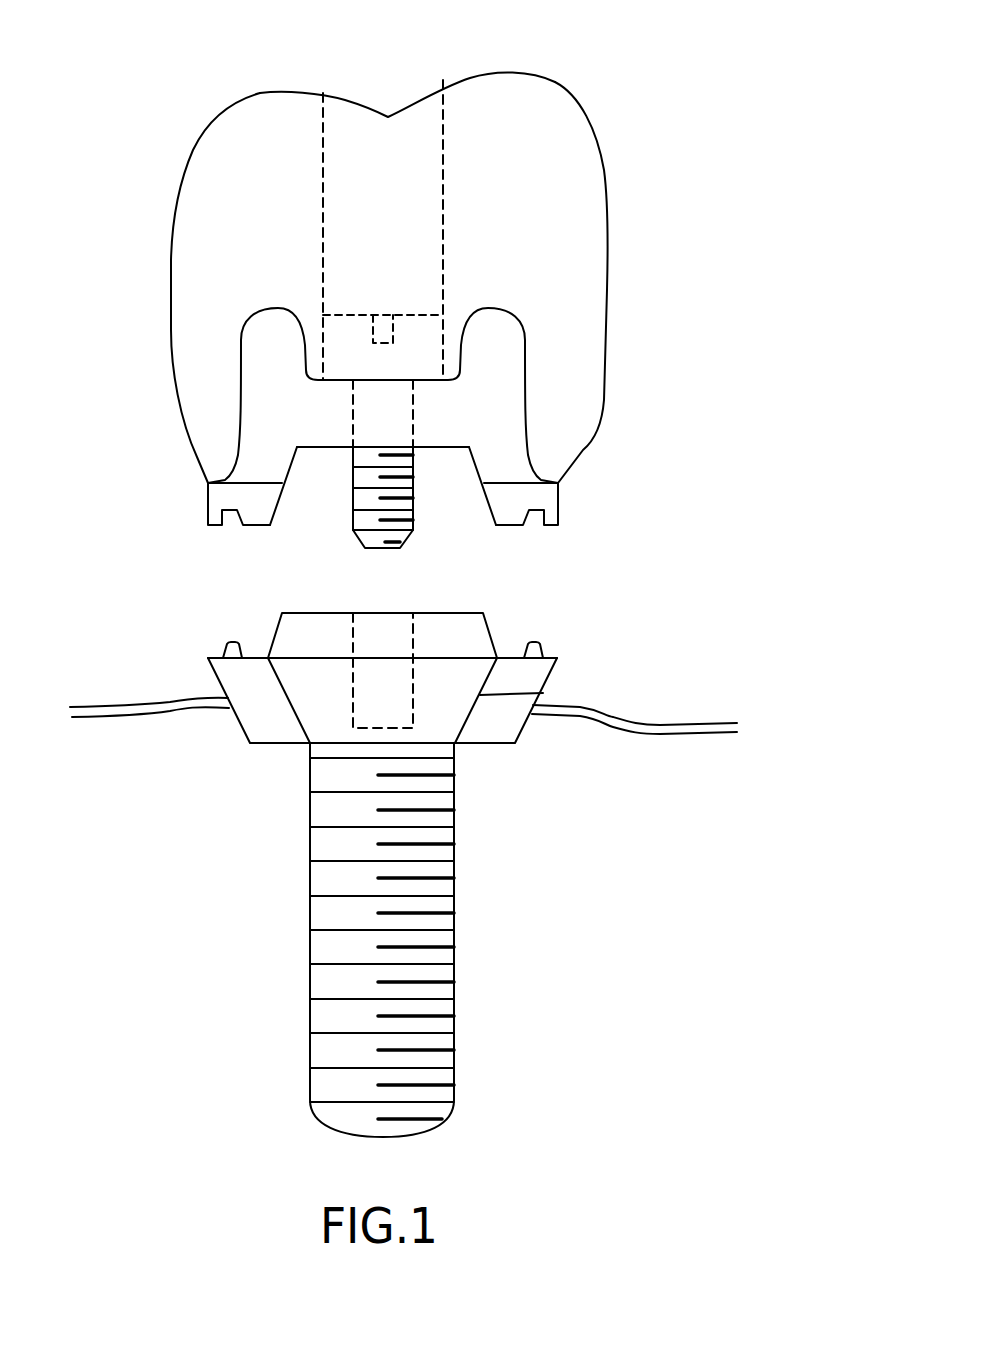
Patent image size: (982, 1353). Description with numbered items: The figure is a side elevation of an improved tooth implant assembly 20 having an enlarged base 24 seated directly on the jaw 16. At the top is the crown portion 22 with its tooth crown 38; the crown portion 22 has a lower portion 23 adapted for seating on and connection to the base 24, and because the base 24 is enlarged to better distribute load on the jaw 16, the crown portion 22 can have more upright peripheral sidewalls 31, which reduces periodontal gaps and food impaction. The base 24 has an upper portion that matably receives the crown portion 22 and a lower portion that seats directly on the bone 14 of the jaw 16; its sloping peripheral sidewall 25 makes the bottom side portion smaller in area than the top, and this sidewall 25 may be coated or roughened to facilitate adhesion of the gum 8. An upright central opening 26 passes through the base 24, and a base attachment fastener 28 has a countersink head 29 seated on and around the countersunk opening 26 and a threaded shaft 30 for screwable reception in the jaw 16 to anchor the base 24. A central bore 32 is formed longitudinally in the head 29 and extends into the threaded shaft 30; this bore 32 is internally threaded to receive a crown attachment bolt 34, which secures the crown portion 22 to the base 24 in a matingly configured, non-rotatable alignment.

The gum 8 is at (737, 730).
The bone 14 is at (150, 712).
The jaw 16 is at (708, 822).
The tooth implant assembly 20 is at (666, 490).
The crown portion 22 is at (620, 75).
The lower portion 23 is at (207, 507).
The base 24 is at (543, 667).
The sloping peripheral sidewall 25 is at (217, 675).
The central opening 26 is at (543, 693).
The base attachment fastener 28 is at (454, 803).
The head 29 is at (433, 713).
The threaded shaft 30 is at (430, 973).
The peripheral sidewalls 31 is at (172, 395).
The central bore 32 is at (412, 632).
The crown attachment bolt 34 is at (347, 350).
The tooth crown 38 is at (518, 72).